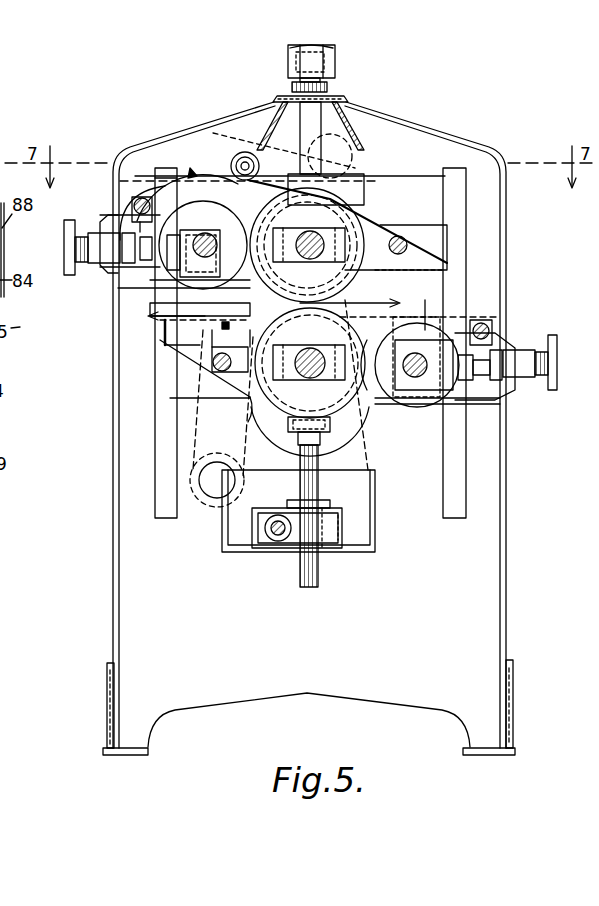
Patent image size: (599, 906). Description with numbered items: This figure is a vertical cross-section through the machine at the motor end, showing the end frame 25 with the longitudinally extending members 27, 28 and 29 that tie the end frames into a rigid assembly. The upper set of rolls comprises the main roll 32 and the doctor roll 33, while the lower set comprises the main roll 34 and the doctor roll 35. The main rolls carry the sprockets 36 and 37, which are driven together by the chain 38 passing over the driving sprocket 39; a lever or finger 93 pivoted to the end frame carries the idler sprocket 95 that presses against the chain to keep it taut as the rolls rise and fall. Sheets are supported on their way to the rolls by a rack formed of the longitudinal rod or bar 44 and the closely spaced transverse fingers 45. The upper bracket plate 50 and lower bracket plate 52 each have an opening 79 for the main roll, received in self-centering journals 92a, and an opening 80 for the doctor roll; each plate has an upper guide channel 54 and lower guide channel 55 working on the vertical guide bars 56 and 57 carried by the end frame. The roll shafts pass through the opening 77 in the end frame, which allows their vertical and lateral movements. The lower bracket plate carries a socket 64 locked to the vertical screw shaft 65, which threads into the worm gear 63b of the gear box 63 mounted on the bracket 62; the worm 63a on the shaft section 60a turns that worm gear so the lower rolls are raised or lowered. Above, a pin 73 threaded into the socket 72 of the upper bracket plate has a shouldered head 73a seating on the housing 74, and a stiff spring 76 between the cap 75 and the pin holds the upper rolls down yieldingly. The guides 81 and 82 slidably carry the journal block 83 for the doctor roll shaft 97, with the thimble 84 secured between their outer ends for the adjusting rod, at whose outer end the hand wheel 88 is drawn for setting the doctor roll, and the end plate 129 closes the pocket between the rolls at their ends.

The end frame 25 is at (309, 428).
The longitudinally extending member 27 is at (360, 122).
The longitudinally extending member 28 is at (510, 668).
The longitudinally extending member 29 is at (107, 680).
The main roll 32 is at (378, 217).
The doctor roll 33 is at (152, 291).
The main roll 34 is at (256, 424).
The doctor roll 35 is at (415, 405).
The sprocket 36 is at (380, 270).
The sprocket 37 is at (347, 420).
The chain 38 is at (170, 398).
The driving sprocket 39 is at (200, 500).
The longitudinal rod or bar 44 is at (192, 330).
The transverse fingers 45 is at (155, 318).
The upper bracket plate 50 is at (442, 262).
The lower bracket plate 52 is at (210, 340).
The upper guide channel 54 is at (122, 195).
The lower guide channel 55 is at (447, 278).
The vertical guide bar 56 is at (453, 499).
The vertical guide bar 57 is at (153, 497).
The shaft section 60a is at (278, 542).
The bracket 62 is at (377, 538).
The gear box 63 is at (342, 527).
The worm 63a is at (256, 550).
The worm gear 63b is at (327, 550).
The socket 64 is at (320, 432).
The vertical screw shaft 65 is at (300, 490).
The socket 72 is at (330, 176).
The pin 73 is at (258, 120).
The shouldered head 73a is at (290, 60).
The housing 74 is at (328, 88).
The cap 75 is at (333, 70).
The spring 76 is at (320, 48).
The opening 77 is at (250, 402).
The opening 79 is at (288, 265).
The opening 80 is at (418, 355).
The guide 81 is at (116, 273).
The guide 82 is at (110, 219).
The journal block 83 is at (313, 315).
The thimble 84 is at (95, 262).
The hand wheel 88 is at (63, 248).
The journals 92a is at (340, 230).
The lever or finger 93 is at (234, 158).
The idler sprocket 95 is at (213, 133).
The doctor roll shaft 97 is at (432, 395).
The end plate 129 is at (192, 174).